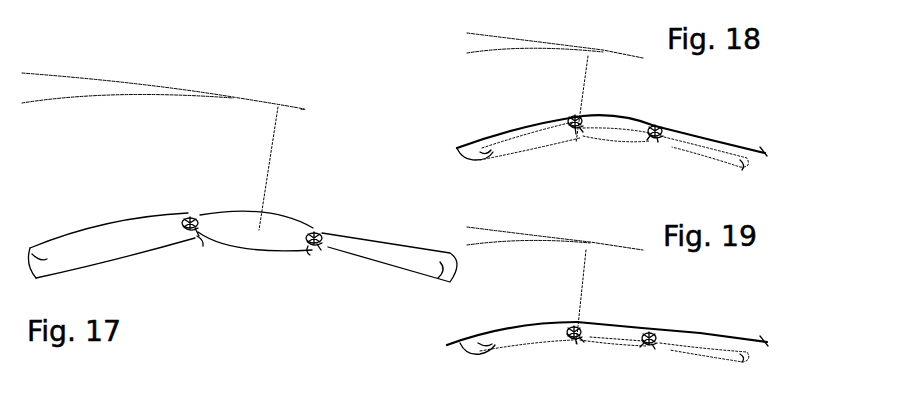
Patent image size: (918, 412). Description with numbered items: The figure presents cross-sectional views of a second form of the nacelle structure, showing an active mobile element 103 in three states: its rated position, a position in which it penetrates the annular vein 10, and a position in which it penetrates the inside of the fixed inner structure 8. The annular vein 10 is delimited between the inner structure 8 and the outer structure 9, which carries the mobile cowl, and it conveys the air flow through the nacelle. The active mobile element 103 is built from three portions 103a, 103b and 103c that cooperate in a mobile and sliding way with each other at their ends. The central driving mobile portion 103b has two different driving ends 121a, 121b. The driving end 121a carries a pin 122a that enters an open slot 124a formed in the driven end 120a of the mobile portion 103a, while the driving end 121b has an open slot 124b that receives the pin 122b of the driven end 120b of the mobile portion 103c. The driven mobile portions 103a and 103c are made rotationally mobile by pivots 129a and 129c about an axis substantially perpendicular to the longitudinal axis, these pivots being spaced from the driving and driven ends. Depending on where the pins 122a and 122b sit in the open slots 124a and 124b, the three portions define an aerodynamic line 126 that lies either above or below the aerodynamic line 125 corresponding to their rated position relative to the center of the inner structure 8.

In FIG. 17, the inner structure 8 is at (242, 239).
In FIG. 17, the outer structure 9 is at (239, 93).
In FIG. 18, the outer structure 9 is at (606, 49).
In FIG. 19, the outer structure 9 is at (588, 241).
In FIG. 17, the annular vein 10 is at (84, 131).
In FIG. 18, the annular vein 10 is at (571, 61).
In FIG. 19, the annular vein 10 is at (571, 257).
In FIG. 17, the active mobile element 103 is at (242, 239).
In FIG. 17, the mobile portion 103a is at (112, 251).
In FIG. 18, the mobile portion 103a is at (496, 142).
In FIG. 19, the mobile portion 103a is at (483, 337).
In FIG. 17, the driving mobile portion 103b is at (240, 233).
In FIG. 18, the driving mobile portion 103b is at (598, 117).
In FIG. 19, the driving mobile portion 103b is at (592, 320).
In FIG. 17, the mobile portion 103c is at (407, 260).
In FIG. 18, the mobile portion 103c is at (690, 143).
In FIG. 19, the mobile portion 103c is at (690, 343).
In FIG. 17, the driven end 120a is at (194, 233).
In FIG. 18, the driven end 120a is at (576, 134).
In FIG. 19, the driven end 120a is at (577, 337).
In FIG. 17, the driven end 120b is at (314, 250).
In FIG. 18, the driven end 120b is at (658, 132).
In FIG. 19, the driven end 120b is at (657, 342).
In FIG. 17, the driving end 121a is at (203, 238).
In FIG. 18, the driving end 121a is at (583, 132).
In FIG. 19, the driving end 121a is at (583, 335).
In FIG. 17, the driving end 121b is at (305, 250).
In FIG. 18, the driving end 121b is at (647, 135).
In FIG. 19, the driving end 121b is at (640, 342).
In FIG. 17, the pin 122a is at (190, 216).
In FIG. 18, the pin 122a is at (581, 115).
In FIG. 19, the pin 122a is at (581, 318).
In FIG. 17, the pin 122b is at (319, 229).
In FIG. 18, the pin 122b is at (660, 129).
In FIG. 19, the pin 122b is at (657, 338).
In FIG. 17, the open slot 124a is at (187, 217).
In FIG. 18, the open slot 124a is at (575, 113).
In FIG. 19, the open slot 124a is at (577, 318).
In FIG. 17, the open slot 124b is at (310, 230).
In FIG. 18, the open slot 124b is at (655, 124).
In FIG. 19, the open slot 124b is at (650, 332).
In FIG. 17, the aerodynamic line 125 is at (29, 248).
In FIG. 18, the aerodynamic line 125 is at (507, 133).
In FIG. 19, the aerodynamic line 125 is at (513, 328).
In FIG. 18, the aerodynamic line 126 is at (766, 152).
In FIG. 19, the aerodynamic line 126 is at (764, 340).
In FIG. 17, the pivot 129a is at (47, 259).
In FIG. 18, the pivot 129a is at (487, 151).
In FIG. 19, the pivot 129a is at (490, 347).
In FIG. 17, the pivot 129c is at (438, 268).
In FIG. 18, the pivot 129c is at (740, 168).
In FIG. 19, the pivot 129c is at (740, 360).